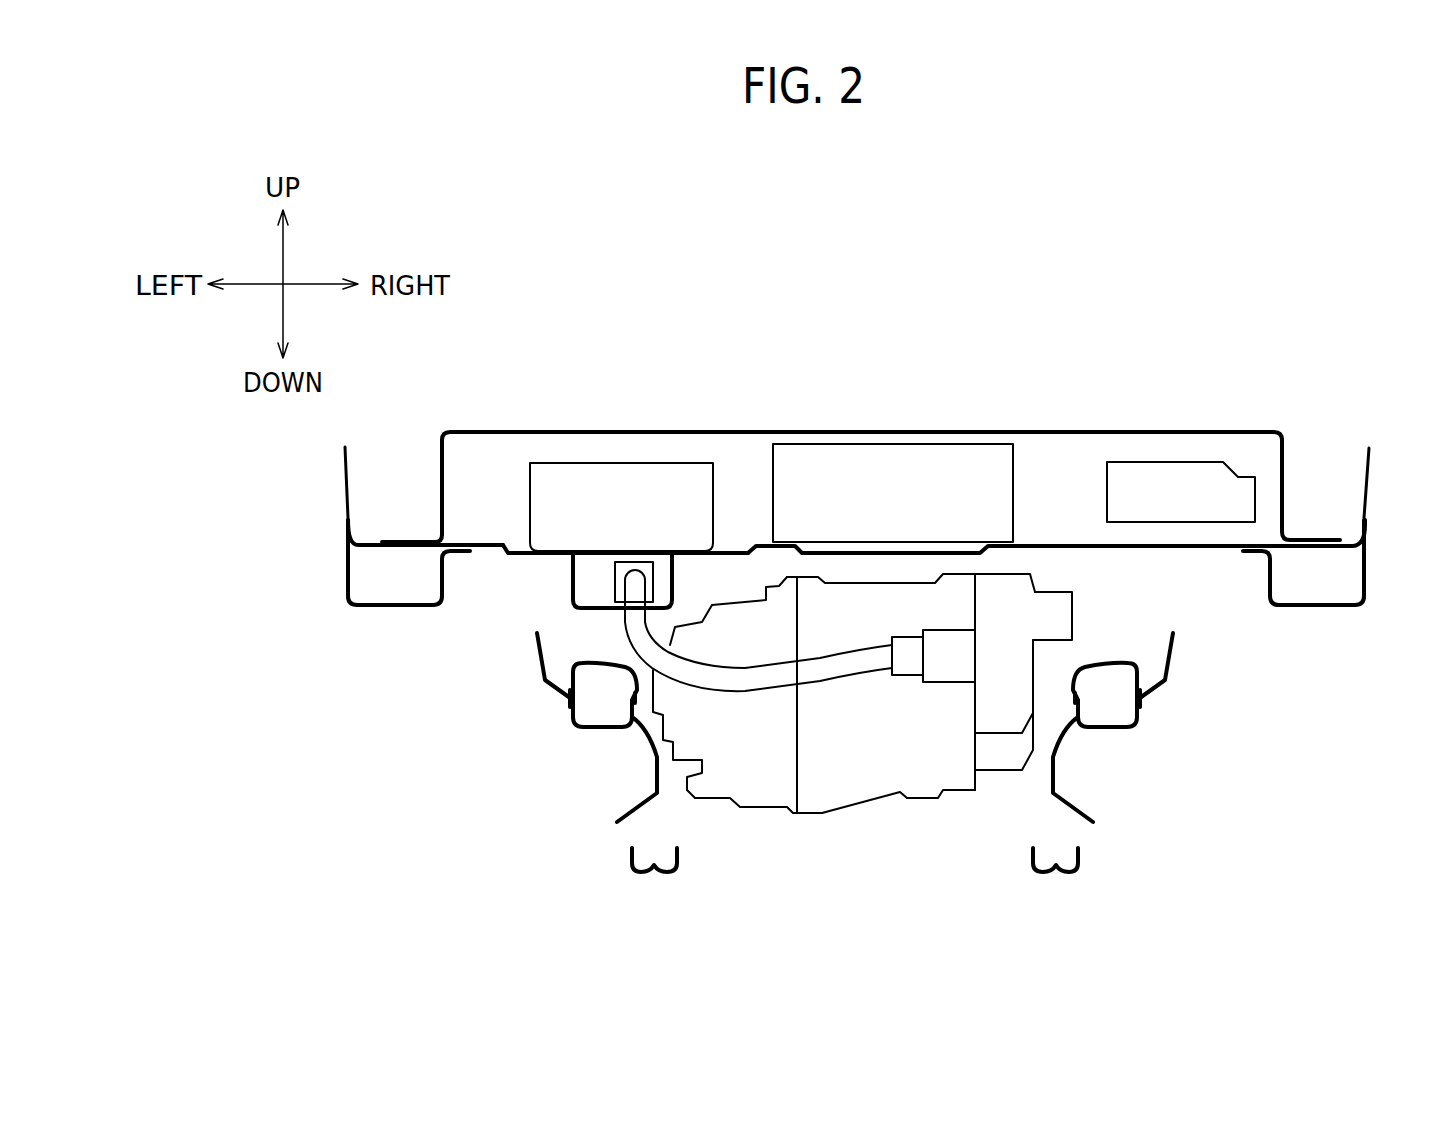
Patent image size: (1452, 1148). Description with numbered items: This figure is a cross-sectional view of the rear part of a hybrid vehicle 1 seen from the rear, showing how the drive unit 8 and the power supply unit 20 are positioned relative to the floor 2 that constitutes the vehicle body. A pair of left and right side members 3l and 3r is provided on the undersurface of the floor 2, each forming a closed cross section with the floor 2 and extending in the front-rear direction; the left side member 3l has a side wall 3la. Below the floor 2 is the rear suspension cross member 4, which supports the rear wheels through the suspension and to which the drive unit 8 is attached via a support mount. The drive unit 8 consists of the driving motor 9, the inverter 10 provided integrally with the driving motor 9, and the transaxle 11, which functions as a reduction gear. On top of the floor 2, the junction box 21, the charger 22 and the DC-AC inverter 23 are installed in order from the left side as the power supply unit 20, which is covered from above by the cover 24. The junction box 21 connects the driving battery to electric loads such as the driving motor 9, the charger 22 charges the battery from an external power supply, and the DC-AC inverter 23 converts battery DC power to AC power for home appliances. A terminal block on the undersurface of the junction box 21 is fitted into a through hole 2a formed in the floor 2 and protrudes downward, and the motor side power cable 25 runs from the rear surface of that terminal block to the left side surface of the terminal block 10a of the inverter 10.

The hybrid vehicle 1 is at (1080, 244).
The floor 2 is at (856, 487).
The through hole 2a is at (570, 553).
The left side member 3l is at (378, 553).
The side wall of left side member 3la is at (443, 582).
The right side member 3r is at (1366, 568).
The rear suspension cross member 4 is at (657, 777).
The drive unit 8 is at (983, 888).
The driving motor 9 is at (880, 822).
The inverter 10 is at (1045, 734).
The terminal block of inverter 10a is at (1022, 692).
The transaxle 11 is at (767, 790).
The power supply unit 20 is at (1073, 338).
The junction box 21 is at (678, 477).
The charger 22 is at (877, 470).
The DC-AC inverter 23 is at (1138, 475).
The cover 24 is at (1183, 432).
The motor side power cable 25 is at (840, 672).